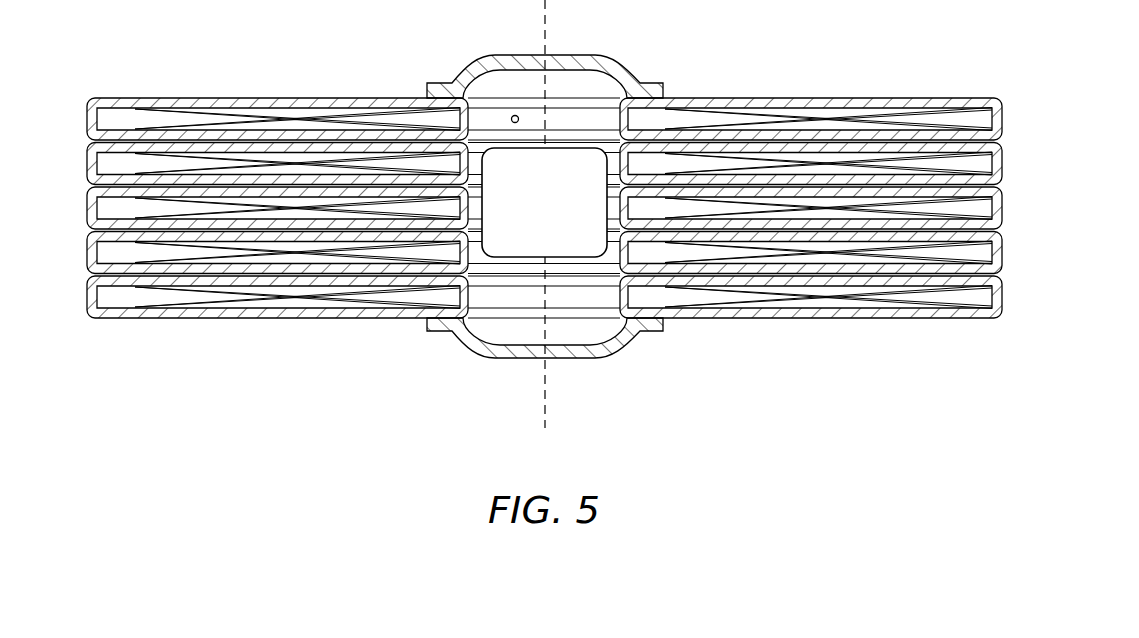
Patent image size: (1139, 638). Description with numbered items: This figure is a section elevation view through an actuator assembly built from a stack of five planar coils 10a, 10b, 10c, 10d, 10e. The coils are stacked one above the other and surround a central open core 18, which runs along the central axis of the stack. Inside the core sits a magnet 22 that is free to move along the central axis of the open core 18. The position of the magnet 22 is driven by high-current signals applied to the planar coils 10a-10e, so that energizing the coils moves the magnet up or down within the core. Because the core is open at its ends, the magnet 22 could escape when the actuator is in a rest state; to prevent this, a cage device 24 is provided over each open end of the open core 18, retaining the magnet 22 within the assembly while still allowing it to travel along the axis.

The planar coil 10a is at (1003, 116).
The planar coil 10b is at (1003, 160).
The planar coil 10c is at (1003, 205).
The planar coil 10d is at (1003, 250).
The planar coil 10e is at (1003, 294).
The open core 18 is at (515, 115).
The magnet 22 is at (570, 148).
The cage device 24 is at (617, 353).